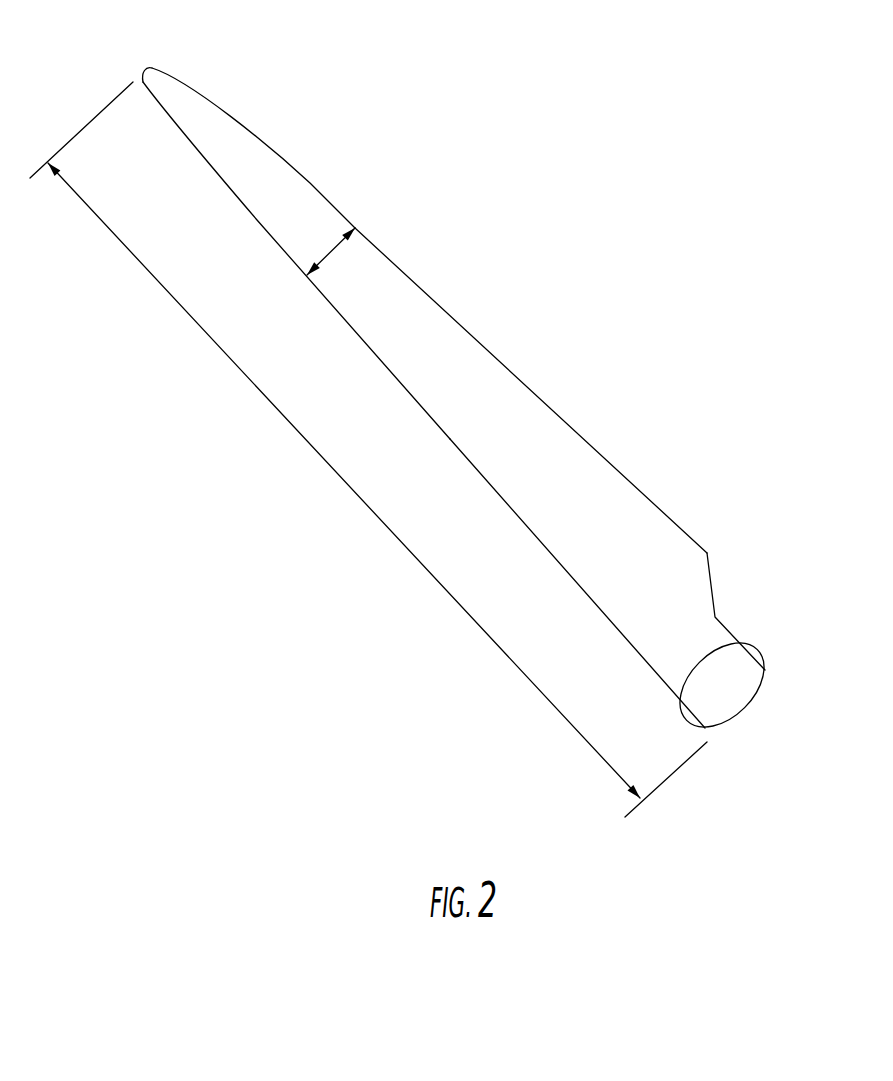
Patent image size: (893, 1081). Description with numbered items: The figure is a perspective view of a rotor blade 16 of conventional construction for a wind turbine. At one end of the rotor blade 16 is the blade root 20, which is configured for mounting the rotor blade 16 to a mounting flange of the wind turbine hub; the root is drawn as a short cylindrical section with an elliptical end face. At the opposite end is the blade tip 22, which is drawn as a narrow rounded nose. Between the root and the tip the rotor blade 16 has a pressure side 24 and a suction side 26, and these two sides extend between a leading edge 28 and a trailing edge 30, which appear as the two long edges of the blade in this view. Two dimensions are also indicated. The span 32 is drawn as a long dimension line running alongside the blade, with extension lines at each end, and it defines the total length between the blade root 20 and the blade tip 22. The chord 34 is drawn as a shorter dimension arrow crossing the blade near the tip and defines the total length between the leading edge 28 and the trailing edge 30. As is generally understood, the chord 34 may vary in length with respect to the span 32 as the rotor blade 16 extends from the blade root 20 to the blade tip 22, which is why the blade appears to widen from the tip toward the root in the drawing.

The rotor blade 16 is at (630, 257).
The blade root 20 is at (718, 672).
The blade tip 22 is at (145, 70).
The pressure side 24 is at (552, 503).
The suction side 26 is at (482, 367).
The leading edge 28 is at (373, 356).
The trailing edge 30 is at (310, 184).
The span 32 is at (243, 373).
The chord 34 is at (330, 252).